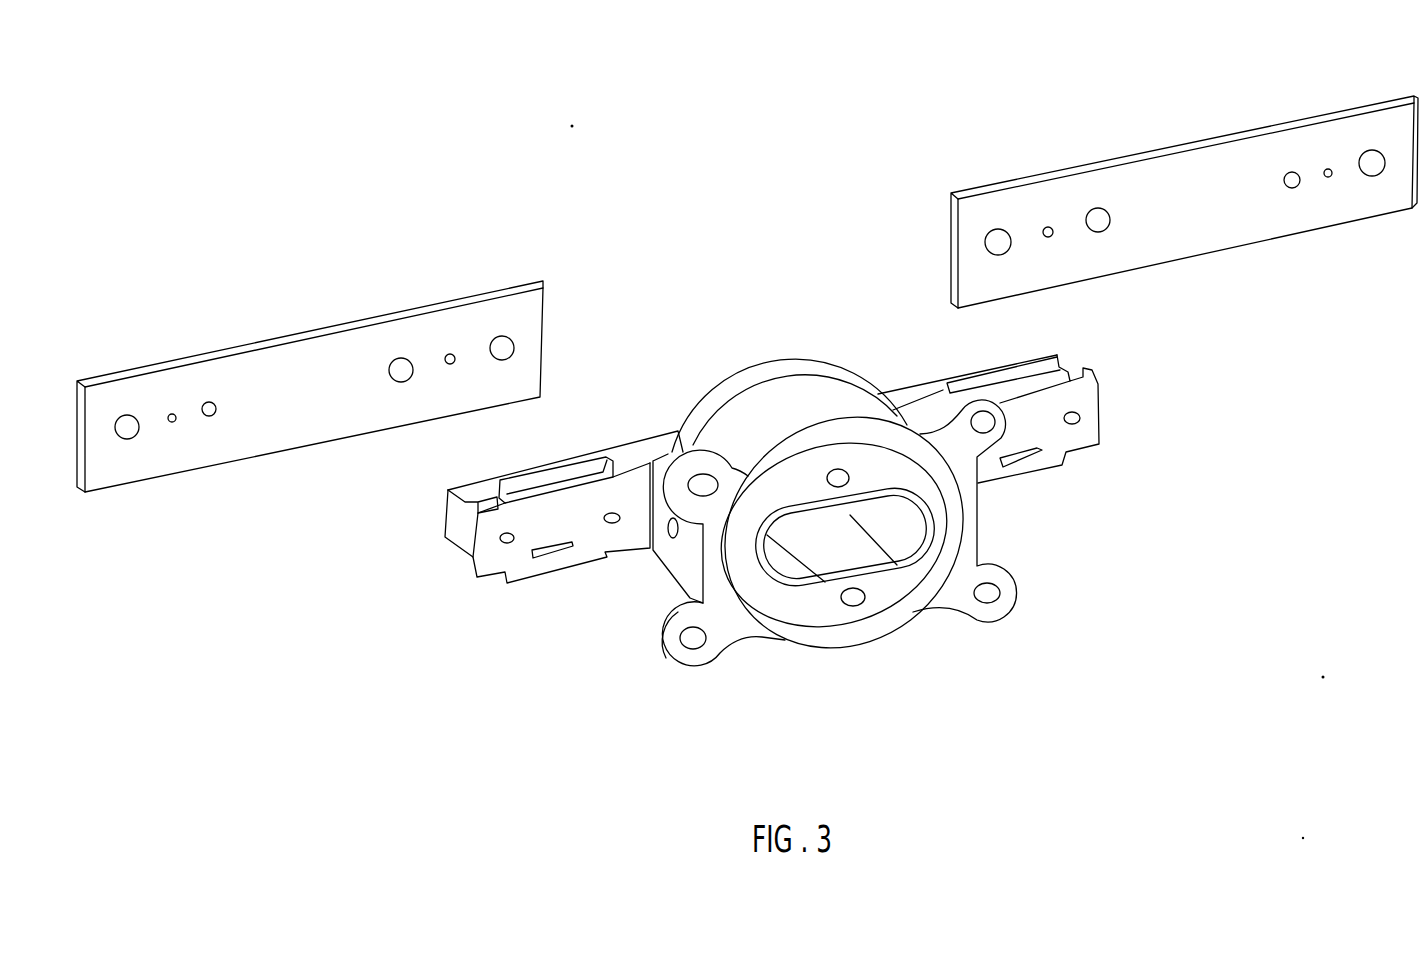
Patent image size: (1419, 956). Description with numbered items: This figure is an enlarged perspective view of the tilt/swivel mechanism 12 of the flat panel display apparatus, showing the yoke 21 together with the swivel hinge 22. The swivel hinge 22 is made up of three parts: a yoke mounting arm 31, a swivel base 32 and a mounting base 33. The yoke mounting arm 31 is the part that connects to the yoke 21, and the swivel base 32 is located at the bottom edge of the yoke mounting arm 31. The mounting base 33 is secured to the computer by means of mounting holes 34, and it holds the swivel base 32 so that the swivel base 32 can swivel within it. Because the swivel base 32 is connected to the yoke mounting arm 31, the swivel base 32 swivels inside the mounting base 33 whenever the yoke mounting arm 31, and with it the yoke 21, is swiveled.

The socket assembly 12 is at (930, 73).
The yoke 21 is at (265, 340).
The swivel hinge 22 is at (913, 354).
The yoke mounting arm 31 is at (446, 522).
The swivel base 32 is at (788, 632).
The mounting base 33 is at (965, 513).
The mounting holes 34 is at (698, 478).